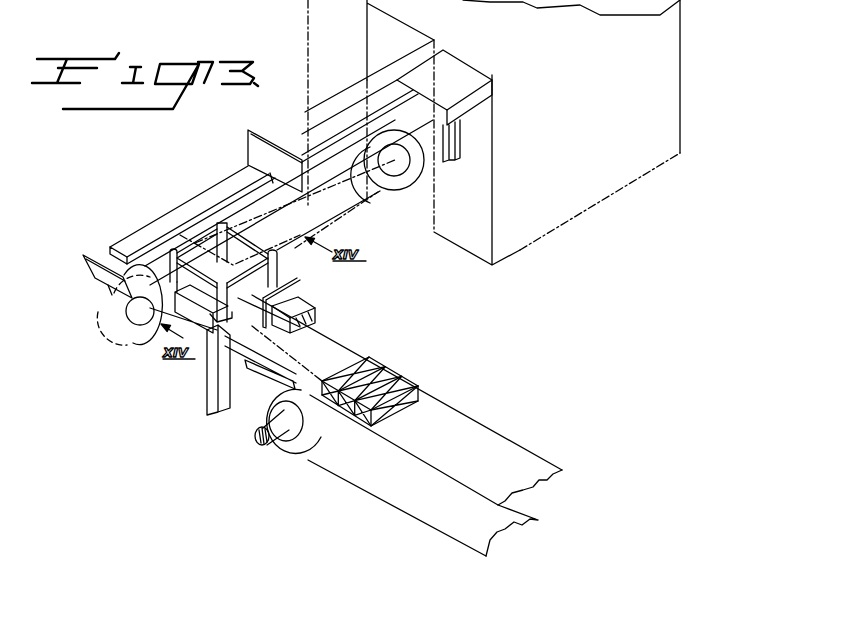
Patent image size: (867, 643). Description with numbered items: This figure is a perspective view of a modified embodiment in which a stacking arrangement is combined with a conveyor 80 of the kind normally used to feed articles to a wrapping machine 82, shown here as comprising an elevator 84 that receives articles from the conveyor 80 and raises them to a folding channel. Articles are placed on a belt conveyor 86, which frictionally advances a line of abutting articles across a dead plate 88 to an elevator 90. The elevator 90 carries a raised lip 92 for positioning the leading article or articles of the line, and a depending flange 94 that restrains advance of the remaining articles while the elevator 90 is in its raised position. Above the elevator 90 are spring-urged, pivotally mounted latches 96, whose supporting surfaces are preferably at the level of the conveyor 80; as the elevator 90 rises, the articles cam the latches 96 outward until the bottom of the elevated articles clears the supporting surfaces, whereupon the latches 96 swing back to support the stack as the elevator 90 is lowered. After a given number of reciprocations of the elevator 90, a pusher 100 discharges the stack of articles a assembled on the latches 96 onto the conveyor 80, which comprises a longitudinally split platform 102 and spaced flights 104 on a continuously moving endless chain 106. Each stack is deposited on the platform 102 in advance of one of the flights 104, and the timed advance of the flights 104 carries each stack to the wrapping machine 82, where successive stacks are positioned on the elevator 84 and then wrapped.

The conveyor 80 is at (132, 200).
The wrapping machine 82 is at (594, 212).
The elevator 84 is at (478, 40).
The belt conveyor 86 is at (487, 425).
The dead plate 88 is at (266, 378).
The elevator 90 is at (203, 335).
The raised lip 92 is at (153, 326).
The depending flange 94 is at (230, 416).
The latches 96 is at (128, 262).
The pusher 100 is at (303, 290).
The longitudinally split platform 102 is at (215, 157).
The flights 104 is at (260, 127).
The endless chain 106 is at (323, 229).
The stack of articles a is at (410, 375).